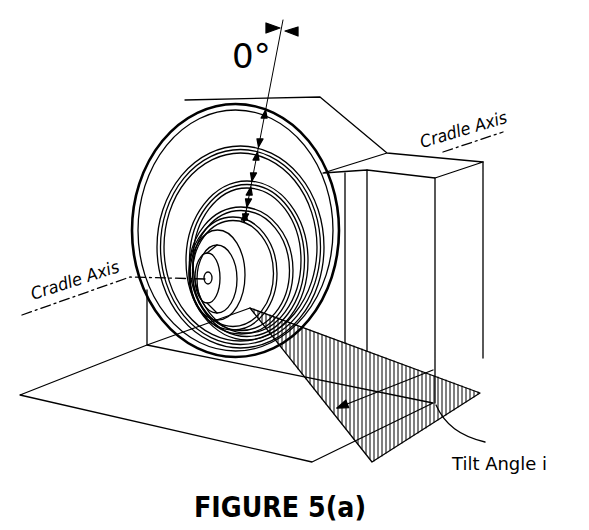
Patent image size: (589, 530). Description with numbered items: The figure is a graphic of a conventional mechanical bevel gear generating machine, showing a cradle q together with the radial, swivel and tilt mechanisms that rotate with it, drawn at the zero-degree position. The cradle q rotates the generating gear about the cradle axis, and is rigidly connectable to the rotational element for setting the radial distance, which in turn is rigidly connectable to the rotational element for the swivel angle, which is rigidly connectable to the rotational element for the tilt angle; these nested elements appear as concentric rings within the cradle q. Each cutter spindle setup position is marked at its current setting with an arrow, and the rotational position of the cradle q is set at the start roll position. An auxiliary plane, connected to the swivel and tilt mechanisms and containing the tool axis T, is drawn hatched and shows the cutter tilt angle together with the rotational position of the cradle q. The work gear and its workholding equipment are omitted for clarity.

The cradle q is at (256, 124).
The tool axis T is at (183, 303).